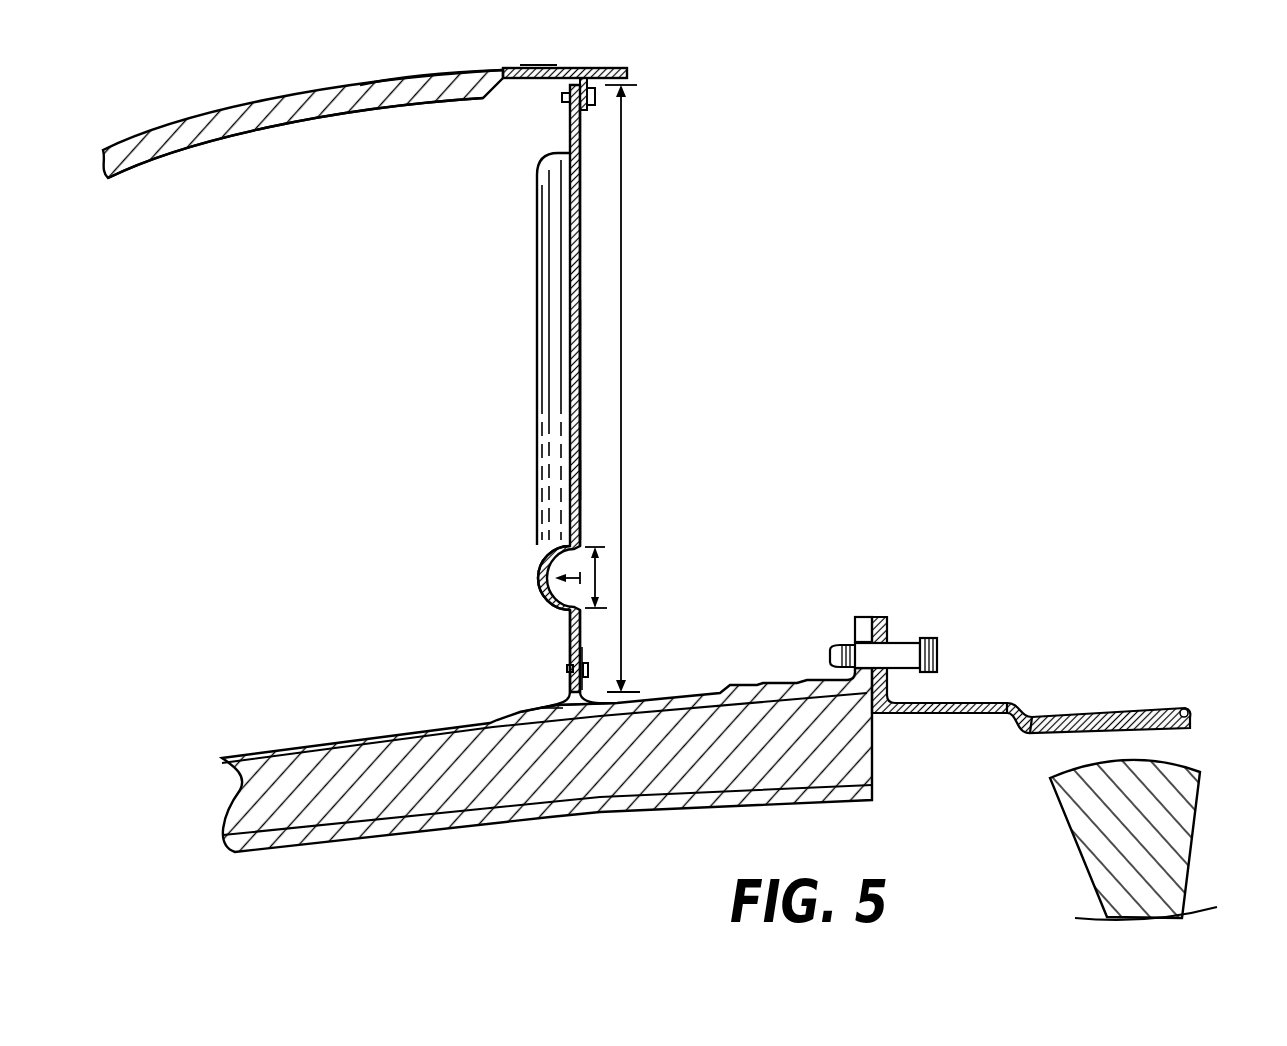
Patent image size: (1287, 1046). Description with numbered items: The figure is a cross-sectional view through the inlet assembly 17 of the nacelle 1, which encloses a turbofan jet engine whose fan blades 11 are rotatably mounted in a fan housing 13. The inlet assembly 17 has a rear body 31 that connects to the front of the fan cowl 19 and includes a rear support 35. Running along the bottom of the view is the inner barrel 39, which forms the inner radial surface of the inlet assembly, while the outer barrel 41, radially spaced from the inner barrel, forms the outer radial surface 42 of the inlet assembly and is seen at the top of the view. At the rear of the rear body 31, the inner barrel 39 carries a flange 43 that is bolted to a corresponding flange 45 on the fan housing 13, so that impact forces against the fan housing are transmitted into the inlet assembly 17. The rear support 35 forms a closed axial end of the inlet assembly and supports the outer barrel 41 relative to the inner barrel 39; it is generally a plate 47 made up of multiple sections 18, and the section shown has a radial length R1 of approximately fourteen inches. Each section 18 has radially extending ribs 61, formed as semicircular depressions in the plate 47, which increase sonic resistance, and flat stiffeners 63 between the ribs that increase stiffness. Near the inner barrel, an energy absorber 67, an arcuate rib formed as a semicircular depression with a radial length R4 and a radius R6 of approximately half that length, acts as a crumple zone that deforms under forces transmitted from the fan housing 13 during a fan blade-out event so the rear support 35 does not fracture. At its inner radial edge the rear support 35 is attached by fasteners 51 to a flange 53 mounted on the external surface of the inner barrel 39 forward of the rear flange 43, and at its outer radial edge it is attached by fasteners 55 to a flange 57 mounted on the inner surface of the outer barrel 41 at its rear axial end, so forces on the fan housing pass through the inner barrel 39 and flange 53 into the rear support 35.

The nacelle 1 is at (554, 56).
The fan blades 11 is at (1170, 833).
The fan housing 13 is at (1007, 702).
The inlet assembly 17 is at (746, 211).
The sections 18 is at (580, 140).
The fan cowl 19 is at (1131, 705).
The rear body 31 is at (217, 112).
The rear support 35 is at (575, 640).
The inner barrel 39 is at (430, 800).
The outer barrel 41 is at (305, 98).
The outer radial surface 42 is at (403, 80).
The flange 43 is at (862, 618).
The flange 45 is at (883, 617).
The plate 47 is at (580, 510).
The fasteners 51 is at (568, 670).
The flange 53 is at (543, 705).
The fasteners 55 is at (563, 103).
The flange 57 is at (585, 67).
The ribs 61 is at (537, 418).
The stiffeners 63 is at (580, 405).
The energy absorber 67 is at (540, 587).
The radial length R1 is at (621, 243).
The radial length R4 is at (600, 575).
The radius R6 is at (540, 555).